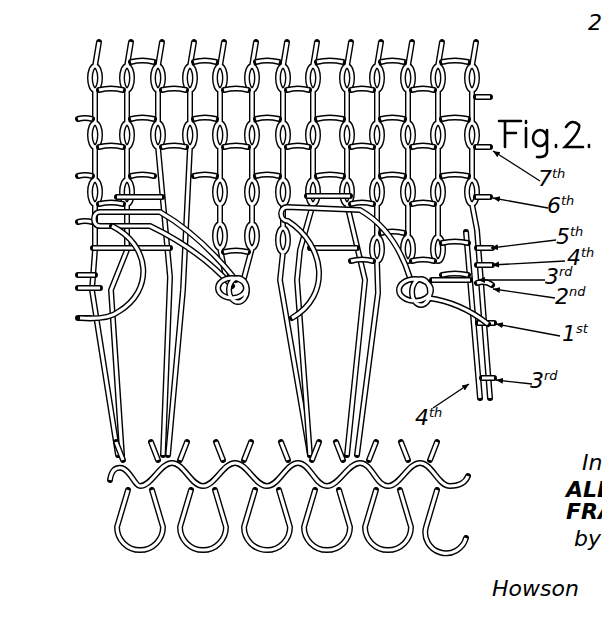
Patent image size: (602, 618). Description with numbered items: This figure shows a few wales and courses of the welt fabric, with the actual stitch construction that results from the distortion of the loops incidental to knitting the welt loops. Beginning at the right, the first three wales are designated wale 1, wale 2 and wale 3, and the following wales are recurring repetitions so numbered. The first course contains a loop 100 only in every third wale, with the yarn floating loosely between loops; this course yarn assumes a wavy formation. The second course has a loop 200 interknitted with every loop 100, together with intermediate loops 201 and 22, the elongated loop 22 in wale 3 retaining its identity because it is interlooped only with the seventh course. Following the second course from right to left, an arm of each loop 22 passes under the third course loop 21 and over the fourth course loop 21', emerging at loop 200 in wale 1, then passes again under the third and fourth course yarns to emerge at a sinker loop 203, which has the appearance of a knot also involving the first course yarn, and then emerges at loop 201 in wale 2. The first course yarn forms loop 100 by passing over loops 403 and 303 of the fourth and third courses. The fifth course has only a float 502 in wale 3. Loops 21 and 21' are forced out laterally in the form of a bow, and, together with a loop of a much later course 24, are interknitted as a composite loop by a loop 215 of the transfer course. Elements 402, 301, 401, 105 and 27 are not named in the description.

The wale 1 is at (338, 147).
The wale 2 is at (276, 235).
The wale 3 is at (214, 235).
The loop 22 is at (268, 219).
The float 402 is at (163, 197).
The tuck loop 301 is at (200, 252).
The loop 401 is at (271, 216).
The sinker loop 203 is at (238, 278).
The loop 105 is at (341, 208).
The loop 201 is at (210, 298).
The loop 303 is at (233, 305).
The loop 403 is at (259, 298).
The loop 200 is at (262, 297).
The float 502 is at (346, 254).
The loop 100 is at (310, 320).
The loop 21 is at (336, 373).
The loop 21' is at (410, 381).
The selvage 27 is at (590, 395).
The course 24 is at (468, 484).
The loop 215 is at (346, 551).